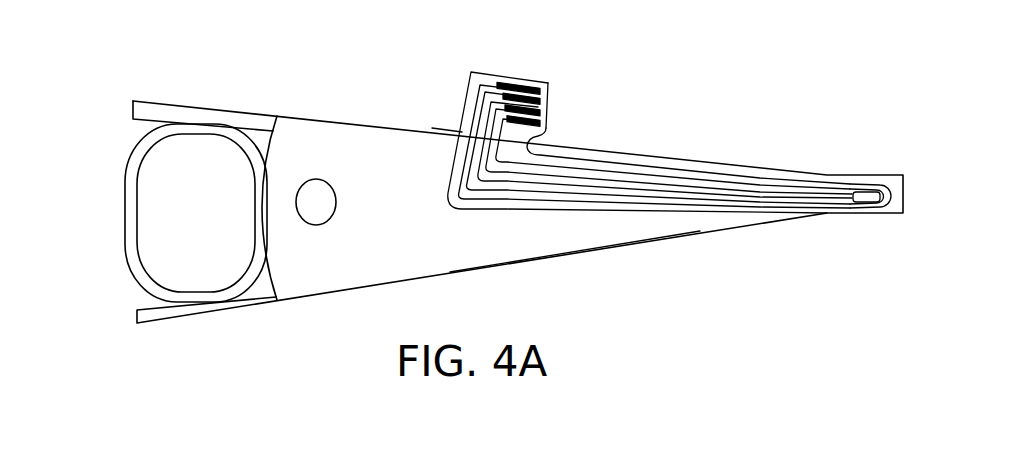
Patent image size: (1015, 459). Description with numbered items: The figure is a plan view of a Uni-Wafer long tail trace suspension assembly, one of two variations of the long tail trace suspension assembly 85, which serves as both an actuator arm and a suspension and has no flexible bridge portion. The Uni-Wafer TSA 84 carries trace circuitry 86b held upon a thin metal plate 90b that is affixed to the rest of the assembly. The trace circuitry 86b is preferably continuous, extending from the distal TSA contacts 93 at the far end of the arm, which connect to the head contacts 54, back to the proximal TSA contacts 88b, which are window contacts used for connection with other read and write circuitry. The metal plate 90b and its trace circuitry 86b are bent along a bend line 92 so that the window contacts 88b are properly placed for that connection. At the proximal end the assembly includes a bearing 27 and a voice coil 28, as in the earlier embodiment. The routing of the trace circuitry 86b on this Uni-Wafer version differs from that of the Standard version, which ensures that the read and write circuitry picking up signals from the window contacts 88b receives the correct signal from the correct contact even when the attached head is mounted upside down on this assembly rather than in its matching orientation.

The long tail trace suspension assembly 85 is at (310, 130).
The voice coil 28 is at (124, 206).
The bearing 27 is at (336, 205).
The thin plate 90b is at (452, 165).
The bend line 92 is at (580, 146).
The trace circuitry 86b is at (617, 190).
The proximal TSA contacts 88b is at (520, 83).
The head contacts 54 is at (875, 188).
The distal TSA contacts 93 is at (893, 190).
The Uni-Wafer Long Tail TSA 84 is at (571, 253).